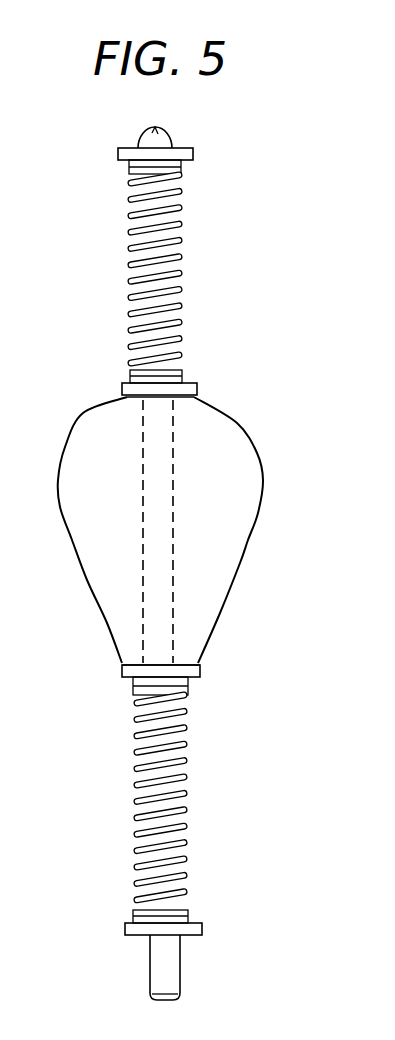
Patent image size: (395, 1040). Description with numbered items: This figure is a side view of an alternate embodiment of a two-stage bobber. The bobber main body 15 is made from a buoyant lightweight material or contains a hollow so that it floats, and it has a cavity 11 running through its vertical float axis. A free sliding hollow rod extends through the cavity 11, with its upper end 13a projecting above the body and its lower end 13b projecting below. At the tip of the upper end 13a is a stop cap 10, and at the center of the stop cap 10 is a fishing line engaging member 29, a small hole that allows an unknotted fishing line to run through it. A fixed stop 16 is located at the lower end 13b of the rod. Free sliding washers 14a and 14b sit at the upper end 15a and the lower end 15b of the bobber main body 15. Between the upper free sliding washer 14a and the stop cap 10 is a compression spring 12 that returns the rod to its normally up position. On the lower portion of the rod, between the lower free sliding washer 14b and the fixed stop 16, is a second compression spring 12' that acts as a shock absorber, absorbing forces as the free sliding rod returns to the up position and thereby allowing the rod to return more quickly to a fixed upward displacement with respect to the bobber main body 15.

The stop cap 10 is at (170, 131).
The fishing line engaging member 29 is at (156, 129).
The compression spring 12 is at (190, 278).
The upper end 13a is at (183, 230).
The free sliding washer 14a is at (190, 386).
The upper end 15a is at (157, 398).
The cavity 11 is at (160, 478).
The bobber main body 15 is at (230, 513).
The lower end 15b is at (143, 662).
The free sliding washer 14b is at (200, 668).
The compression spring 12' is at (202, 809).
The lower end 13b is at (188, 865).
The fixed stop 16 is at (200, 932).